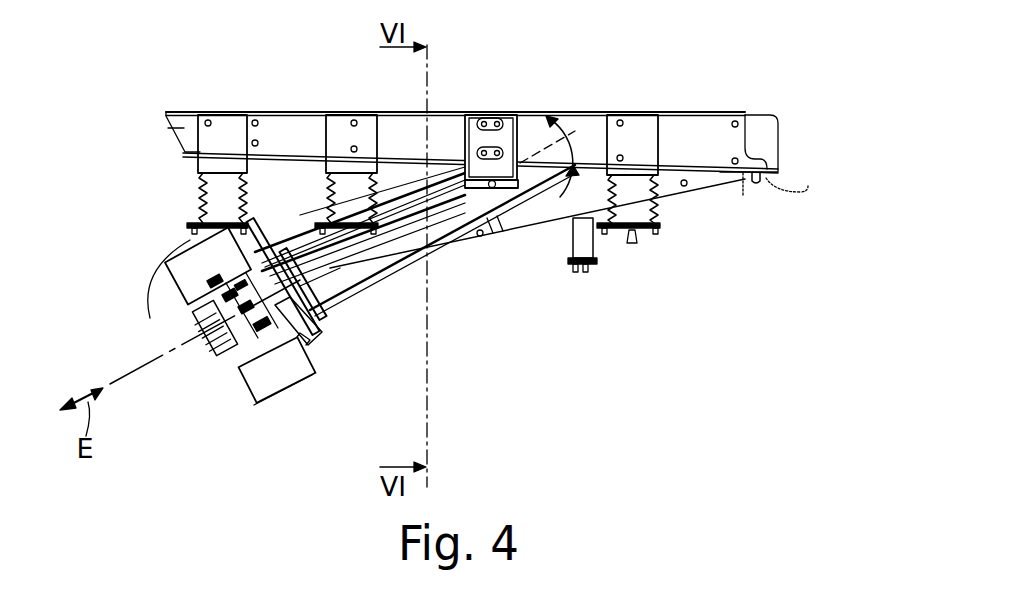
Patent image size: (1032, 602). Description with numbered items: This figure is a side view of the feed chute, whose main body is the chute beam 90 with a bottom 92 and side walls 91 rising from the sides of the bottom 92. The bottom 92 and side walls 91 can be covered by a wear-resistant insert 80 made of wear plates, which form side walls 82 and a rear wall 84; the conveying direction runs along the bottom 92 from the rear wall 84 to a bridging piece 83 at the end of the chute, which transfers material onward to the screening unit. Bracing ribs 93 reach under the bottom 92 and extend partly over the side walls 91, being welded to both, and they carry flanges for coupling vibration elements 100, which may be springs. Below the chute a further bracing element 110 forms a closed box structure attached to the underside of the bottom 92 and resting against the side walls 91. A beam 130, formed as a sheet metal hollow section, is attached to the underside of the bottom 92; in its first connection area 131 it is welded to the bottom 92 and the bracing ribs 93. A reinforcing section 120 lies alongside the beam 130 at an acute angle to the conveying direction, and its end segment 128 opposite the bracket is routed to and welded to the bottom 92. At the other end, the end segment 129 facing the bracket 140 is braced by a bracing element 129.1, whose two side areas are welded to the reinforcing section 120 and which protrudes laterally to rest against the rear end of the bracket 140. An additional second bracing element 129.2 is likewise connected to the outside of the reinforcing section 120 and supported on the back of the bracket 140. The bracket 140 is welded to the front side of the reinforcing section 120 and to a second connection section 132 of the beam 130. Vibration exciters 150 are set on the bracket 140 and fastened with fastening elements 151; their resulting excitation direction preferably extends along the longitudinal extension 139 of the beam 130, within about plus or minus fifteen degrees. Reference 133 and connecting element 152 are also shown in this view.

The wear-resistant insert 80 is at (800, 136).
The side walls 82 is at (768, 134).
The bridging piece 83 is at (800, 193).
The rear wall 84 is at (168, 126).
The chute beam 90 is at (704, 104).
The side walls 91 is at (713, 133).
The bottom 92 is at (722, 181).
The bracing ribs 93 is at (204, 118).
The vibration element 100 is at (341, 196).
The bracing element 110 is at (474, 140).
The reinforcing section 120 is at (403, 254).
The end segment 128 is at (528, 156).
The end segment 129 is at (328, 300).
The bracing element 129.1 is at (256, 220).
The second bracing element 129.2 is at (331, 320).
The beam 130 is at (550, 215).
The first connection area 131 is at (192, 228).
The second connection section 132 is at (196, 316).
The fastening point 133 is at (481, 240).
The longitudinal extension 139 is at (152, 360).
The bracket 140 is at (228, 362).
The vibration exciter 150 is at (272, 365).
The fastening elements 151 is at (255, 302).
The connecting element 152 is at (347, 300).